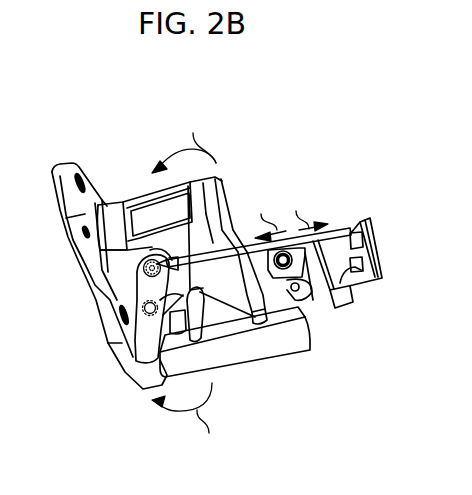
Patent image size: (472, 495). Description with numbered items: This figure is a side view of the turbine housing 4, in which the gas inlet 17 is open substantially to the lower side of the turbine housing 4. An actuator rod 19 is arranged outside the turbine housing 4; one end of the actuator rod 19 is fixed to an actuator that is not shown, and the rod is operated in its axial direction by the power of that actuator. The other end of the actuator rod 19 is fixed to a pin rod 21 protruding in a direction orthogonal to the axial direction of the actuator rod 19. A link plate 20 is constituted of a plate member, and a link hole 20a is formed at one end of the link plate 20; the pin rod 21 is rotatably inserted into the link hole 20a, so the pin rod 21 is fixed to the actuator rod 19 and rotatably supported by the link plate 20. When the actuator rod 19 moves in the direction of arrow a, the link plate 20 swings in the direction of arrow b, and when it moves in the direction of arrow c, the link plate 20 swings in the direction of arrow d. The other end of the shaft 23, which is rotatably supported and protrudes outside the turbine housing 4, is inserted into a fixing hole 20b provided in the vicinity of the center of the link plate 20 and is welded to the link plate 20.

The turbine housing 4 is at (82, 133).
The gas inlet 17 is at (268, 362).
The actuator rod 19 is at (339, 225).
The link plate 20 is at (110, 358).
The link hole 20a is at (144, 266).
The fixing hole 20b is at (124, 316).
The pin rod 21 is at (150, 288).
The shaft 23 is at (140, 310).